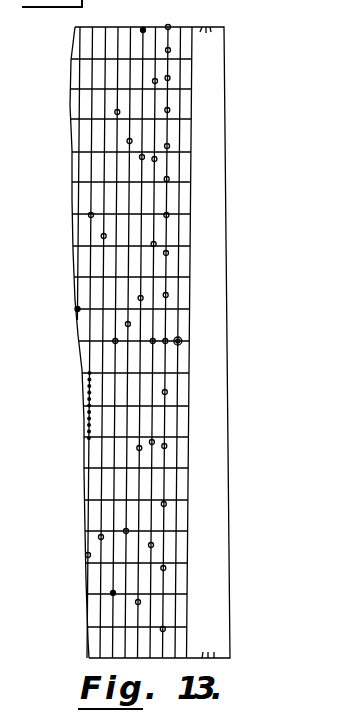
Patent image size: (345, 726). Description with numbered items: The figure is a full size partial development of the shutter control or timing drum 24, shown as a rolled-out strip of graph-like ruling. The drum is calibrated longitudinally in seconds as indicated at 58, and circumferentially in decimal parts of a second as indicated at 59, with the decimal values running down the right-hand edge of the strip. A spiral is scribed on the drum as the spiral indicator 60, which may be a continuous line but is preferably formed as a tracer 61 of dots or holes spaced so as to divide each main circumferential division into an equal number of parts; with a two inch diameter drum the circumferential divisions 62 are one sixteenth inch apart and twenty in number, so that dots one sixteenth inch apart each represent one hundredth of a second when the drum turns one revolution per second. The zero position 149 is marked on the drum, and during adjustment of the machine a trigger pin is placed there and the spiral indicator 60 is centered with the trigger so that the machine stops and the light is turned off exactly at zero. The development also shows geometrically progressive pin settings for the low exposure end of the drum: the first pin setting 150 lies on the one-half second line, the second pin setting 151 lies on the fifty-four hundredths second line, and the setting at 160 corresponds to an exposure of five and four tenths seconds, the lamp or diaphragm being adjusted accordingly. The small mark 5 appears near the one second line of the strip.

The shutter control drum 24 is at (66, 107).
The first pin setting 150 is at (169, 25).
The second pin setting 151 is at (171, 50).
The spiral indicator 60 is at (91, 218).
The circumferential calibration in decimal parts of a second 59 is at (217, 278).
The plotted point 5 is at (110, 332).
The longitudinal calibration in seconds 58 is at (106, 330).
The zero position 149 is at (174, 343).
The tracer dots 61 is at (88, 413).
The circumferential divisions 62 is at (93, 530).
The pin setting for 5.4 second exposure 160 is at (112, 596).